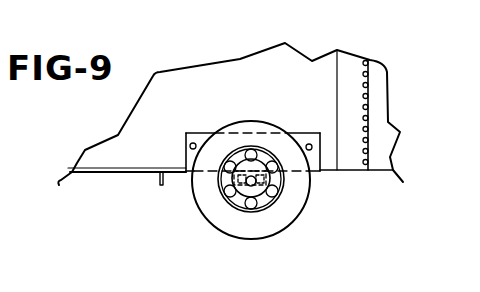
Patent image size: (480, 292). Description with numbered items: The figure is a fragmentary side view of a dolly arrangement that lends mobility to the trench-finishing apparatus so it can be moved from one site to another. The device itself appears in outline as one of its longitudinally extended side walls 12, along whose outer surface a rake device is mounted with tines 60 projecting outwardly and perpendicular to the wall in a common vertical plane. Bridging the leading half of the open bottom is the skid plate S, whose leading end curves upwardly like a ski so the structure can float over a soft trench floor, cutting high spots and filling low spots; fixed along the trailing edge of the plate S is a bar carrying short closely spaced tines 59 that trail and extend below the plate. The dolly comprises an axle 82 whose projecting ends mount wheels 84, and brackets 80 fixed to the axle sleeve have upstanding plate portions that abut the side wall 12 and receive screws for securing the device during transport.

The side wall 12 is at (254, 98).
The tines 60 is at (370, 61).
The skid plate S is at (130, 173).
The tines 59 is at (166, 175).
The bracket 80 is at (205, 133).
The axle 82 is at (255, 183).
The wheel 84 is at (294, 221).